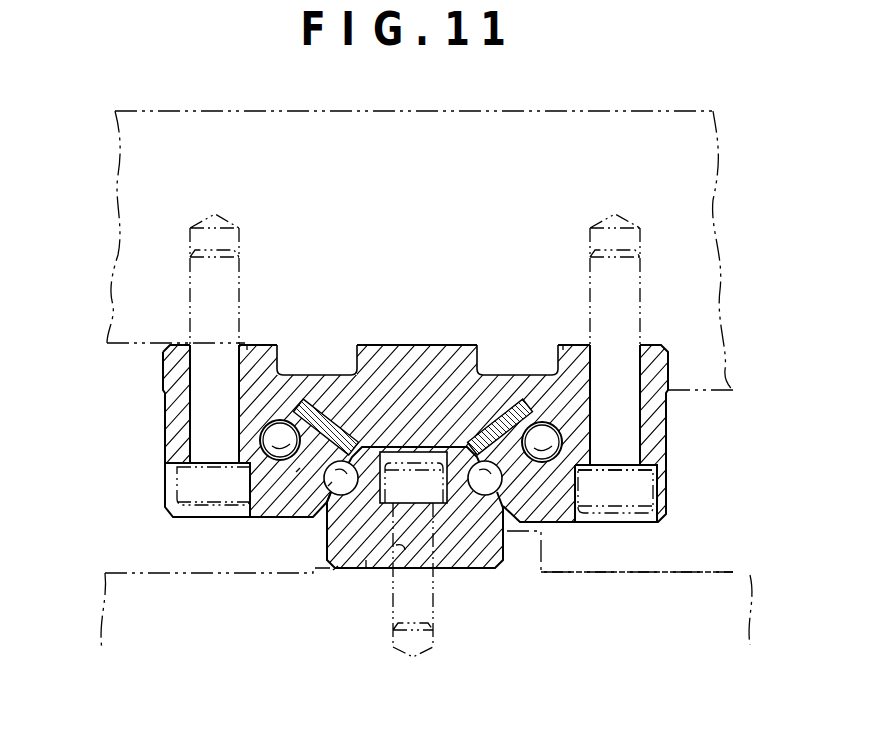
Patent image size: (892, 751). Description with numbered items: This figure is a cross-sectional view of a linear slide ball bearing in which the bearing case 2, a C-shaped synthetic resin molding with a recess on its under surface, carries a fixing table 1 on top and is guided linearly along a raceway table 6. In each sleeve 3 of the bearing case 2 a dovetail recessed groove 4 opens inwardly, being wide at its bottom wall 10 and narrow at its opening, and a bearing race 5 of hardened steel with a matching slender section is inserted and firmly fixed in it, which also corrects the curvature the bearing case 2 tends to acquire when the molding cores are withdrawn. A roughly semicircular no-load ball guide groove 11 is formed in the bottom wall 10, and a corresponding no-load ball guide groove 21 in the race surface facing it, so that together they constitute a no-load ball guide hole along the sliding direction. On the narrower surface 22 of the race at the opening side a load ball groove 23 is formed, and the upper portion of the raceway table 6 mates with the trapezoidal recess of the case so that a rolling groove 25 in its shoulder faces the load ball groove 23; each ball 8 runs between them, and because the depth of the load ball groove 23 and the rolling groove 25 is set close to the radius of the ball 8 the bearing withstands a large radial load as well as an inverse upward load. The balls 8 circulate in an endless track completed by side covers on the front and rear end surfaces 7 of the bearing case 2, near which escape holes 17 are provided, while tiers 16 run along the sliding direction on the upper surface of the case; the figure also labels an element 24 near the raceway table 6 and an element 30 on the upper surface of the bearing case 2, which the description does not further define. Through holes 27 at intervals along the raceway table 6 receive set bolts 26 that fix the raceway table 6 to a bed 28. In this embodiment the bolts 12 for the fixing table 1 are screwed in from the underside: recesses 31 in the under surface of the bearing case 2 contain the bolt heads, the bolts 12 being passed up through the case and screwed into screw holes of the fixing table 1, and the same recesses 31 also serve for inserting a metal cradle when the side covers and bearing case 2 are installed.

The fixing table 1 is at (618, 112).
The bearing case 2 is at (417, 437).
The sleeve 3 is at (655, 402).
The dovetail recessed groove 4 is at (297, 412).
The bearing race 5 is at (262, 477).
The raceway table 6 is at (467, 570).
The front and rear end surface 7 is at (429, 590).
The ball 8 is at (347, 495).
The bottom wall 10 is at (562, 448).
The no-load ball guide groove 11 is at (557, 421).
The bolt 12 is at (190, 275).
The tier 16 is at (248, 345).
The escape hole 17 is at (350, 358).
The no-load ball guide groove 21 is at (277, 462).
The surface 22 is at (330, 484).
The load ball groove 23 is at (298, 470).
The lower member side face 24 is at (333, 570).
The rolling groove 25 is at (360, 510).
The set bolt 26 is at (437, 622).
The through hole 27 is at (403, 545).
The bed 28 is at (727, 573).
The groove 30 is at (320, 370).
The recess 31 is at (610, 470).